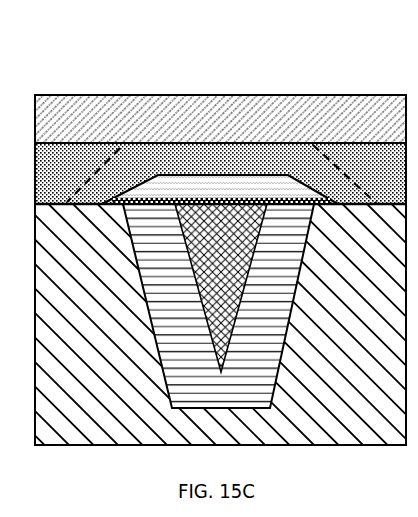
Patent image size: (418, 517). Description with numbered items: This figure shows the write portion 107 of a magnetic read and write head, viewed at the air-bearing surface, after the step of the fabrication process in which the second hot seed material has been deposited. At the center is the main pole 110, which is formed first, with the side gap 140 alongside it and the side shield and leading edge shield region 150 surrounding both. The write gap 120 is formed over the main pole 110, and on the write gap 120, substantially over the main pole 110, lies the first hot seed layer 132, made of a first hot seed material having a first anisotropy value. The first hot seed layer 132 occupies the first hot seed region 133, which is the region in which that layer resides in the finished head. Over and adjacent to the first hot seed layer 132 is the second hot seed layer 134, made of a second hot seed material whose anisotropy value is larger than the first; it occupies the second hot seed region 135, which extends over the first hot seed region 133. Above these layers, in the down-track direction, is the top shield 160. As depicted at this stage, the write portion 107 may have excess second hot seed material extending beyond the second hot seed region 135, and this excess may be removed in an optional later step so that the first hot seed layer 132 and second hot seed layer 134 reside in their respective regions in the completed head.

The write portion 107 is at (157, 58).
The main pole 110 is at (233, 253).
The write gap 120 is at (112, 205).
The first hot seed layer 132 is at (234, 191).
The first hot seed region 133 is at (253, 178).
The second hot seed layer 134 is at (234, 168).
The second hot seed region 135 is at (152, 143).
The side gap 140 is at (233, 400).
The side shield and leading edge shield region 150 is at (237, 438).
The top shield 160 is at (234, 130).